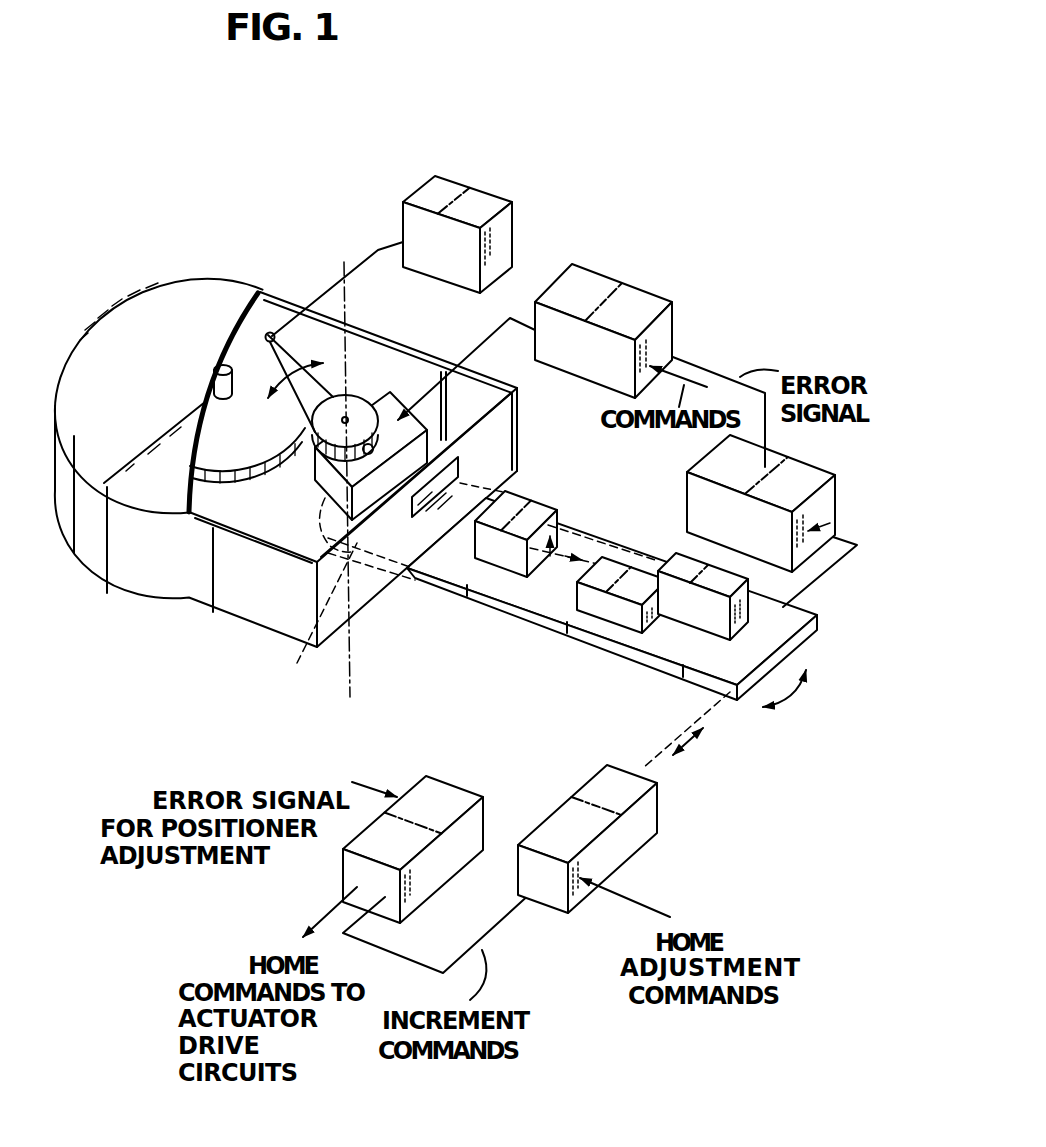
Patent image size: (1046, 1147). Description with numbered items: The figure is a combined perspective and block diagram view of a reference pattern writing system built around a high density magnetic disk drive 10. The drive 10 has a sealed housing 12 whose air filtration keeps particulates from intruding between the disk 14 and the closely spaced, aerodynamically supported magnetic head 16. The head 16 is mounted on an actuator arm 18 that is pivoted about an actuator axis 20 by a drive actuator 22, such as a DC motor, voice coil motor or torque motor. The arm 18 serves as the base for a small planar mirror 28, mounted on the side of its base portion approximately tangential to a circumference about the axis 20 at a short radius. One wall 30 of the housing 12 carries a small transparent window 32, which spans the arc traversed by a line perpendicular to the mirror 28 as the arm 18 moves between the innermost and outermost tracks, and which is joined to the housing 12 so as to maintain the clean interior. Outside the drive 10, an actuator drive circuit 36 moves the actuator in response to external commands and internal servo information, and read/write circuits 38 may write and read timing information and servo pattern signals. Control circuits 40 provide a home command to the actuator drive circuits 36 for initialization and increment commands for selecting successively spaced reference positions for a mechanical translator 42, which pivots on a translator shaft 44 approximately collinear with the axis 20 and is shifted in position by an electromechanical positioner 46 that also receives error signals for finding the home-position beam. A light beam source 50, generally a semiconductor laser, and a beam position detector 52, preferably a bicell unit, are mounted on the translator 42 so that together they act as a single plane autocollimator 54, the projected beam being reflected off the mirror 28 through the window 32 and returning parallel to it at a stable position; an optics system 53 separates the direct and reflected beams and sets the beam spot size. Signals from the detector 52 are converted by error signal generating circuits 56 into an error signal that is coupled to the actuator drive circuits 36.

The magnetic disk drive 10 is at (170, 648).
The sealed housing 12 is at (137, 562).
The disk 14 is at (245, 367).
The magnetic head 16 is at (281, 330).
The actuator arm 18 is at (297, 344).
The actuator axis 20 is at (341, 265).
The drive actuator 22 is at (447, 373).
The planar mirror 28 is at (424, 441).
The wall 30 is at (363, 587).
The transparent window 32 is at (463, 463).
The actuator drive circuit 36 is at (587, 285).
The read/write circuits 38 is at (487, 204).
The control circuits 40 is at (443, 797).
The mechanical translator 42 is at (528, 617).
The translator shaft 44 is at (319, 622).
The electromechanical positioner 46 is at (638, 813).
The light beam source 50 is at (683, 565).
The beam position detector 52 is at (603, 607).
The optics system 53 is at (537, 510).
The autocollimator 54 is at (817, 582).
The error signal generating circuits 56 is at (813, 477).